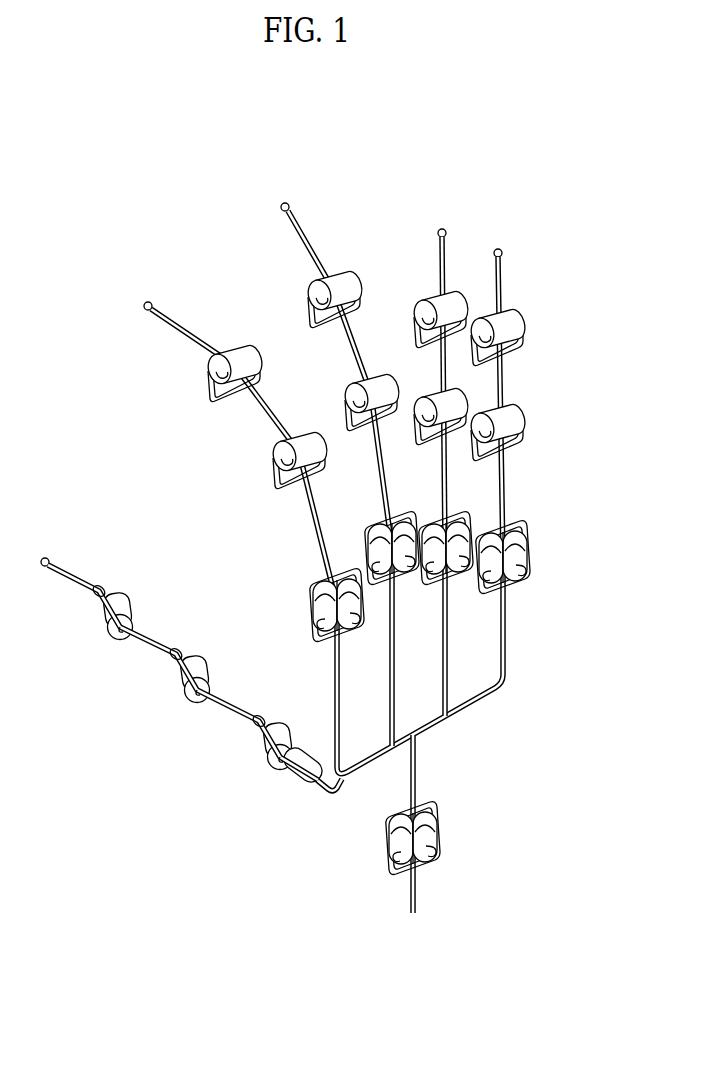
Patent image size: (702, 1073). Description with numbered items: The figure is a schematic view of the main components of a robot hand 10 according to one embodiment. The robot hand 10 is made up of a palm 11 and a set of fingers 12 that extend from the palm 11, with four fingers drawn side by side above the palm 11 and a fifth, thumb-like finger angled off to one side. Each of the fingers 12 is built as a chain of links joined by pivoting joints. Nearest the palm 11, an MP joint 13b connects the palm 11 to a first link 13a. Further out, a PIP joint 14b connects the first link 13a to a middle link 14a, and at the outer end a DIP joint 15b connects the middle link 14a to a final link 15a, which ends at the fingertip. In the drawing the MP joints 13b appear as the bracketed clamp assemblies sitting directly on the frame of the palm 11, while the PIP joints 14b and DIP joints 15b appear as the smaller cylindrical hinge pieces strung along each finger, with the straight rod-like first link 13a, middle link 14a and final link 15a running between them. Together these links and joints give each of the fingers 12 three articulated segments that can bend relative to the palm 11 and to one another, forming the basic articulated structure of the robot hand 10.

The robot hand 10 is at (309, 112).
The palm 11 is at (496, 715).
The fingers 12 is at (217, 440).
The first link 13a is at (309, 534).
The MP joint 13b is at (314, 631).
The middle link 14a is at (262, 423).
The PIP joint 14b is at (268, 477).
The final link 15a is at (166, 325).
The DIP joint 15b is at (198, 381).